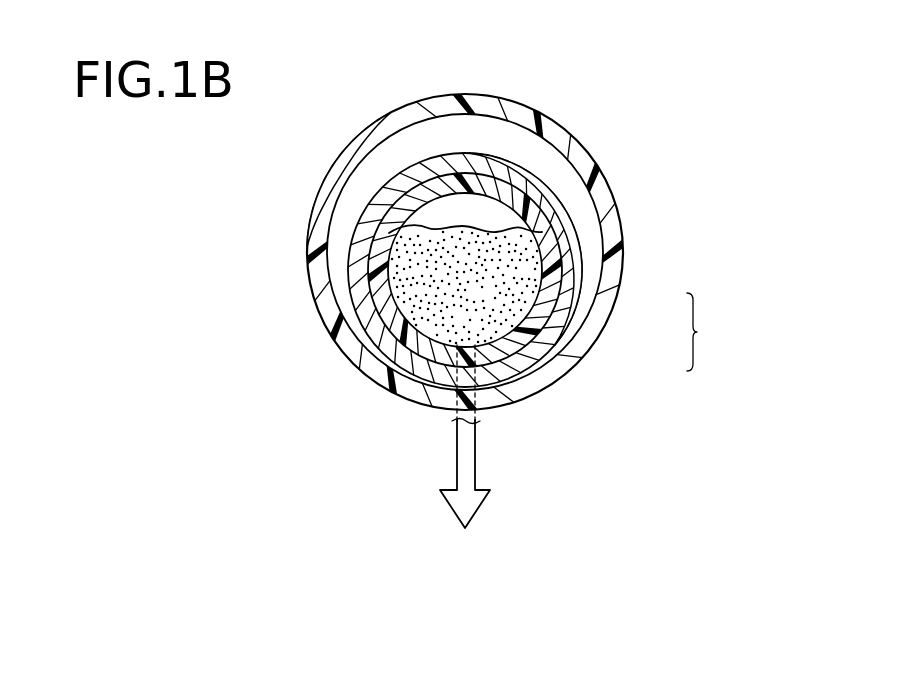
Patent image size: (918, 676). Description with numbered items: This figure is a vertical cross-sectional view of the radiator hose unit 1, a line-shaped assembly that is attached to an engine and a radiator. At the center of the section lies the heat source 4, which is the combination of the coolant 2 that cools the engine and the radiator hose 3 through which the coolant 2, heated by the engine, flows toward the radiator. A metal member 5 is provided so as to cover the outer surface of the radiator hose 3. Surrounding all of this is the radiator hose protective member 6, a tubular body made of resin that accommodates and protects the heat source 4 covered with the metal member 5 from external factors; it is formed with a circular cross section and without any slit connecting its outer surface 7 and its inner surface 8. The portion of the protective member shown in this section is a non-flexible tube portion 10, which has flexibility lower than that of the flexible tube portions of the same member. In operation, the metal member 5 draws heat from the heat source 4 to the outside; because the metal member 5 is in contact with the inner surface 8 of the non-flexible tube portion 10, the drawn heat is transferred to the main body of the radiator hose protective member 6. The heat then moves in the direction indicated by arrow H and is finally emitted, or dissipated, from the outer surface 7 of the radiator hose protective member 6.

The radiator hose unit 1 is at (650, 166).
The coolant 2 is at (494, 275).
The radiator hose 3 is at (540, 318).
The heat source 4 is at (702, 332).
The metal member 5 is at (558, 224).
The radiator hose protective member 6 is at (572, 382).
The outer surface 7 is at (312, 217).
The inner surface 8 is at (350, 250).
The non-flexible tube portion 10 is at (552, 128).
The arrow H is at (476, 443).